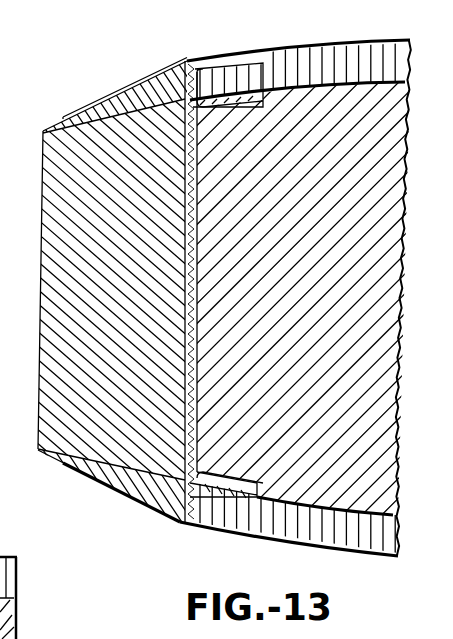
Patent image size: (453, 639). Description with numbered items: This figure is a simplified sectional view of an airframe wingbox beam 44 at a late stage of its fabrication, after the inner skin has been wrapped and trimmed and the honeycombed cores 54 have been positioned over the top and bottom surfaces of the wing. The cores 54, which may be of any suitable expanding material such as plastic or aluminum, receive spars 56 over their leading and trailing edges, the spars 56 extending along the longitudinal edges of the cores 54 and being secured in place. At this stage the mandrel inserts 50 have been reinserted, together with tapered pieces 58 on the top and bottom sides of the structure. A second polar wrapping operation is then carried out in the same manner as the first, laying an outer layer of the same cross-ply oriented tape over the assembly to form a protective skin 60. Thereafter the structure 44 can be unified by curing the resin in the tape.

The wingbox beam 44 is at (277, 38).
The mandrel insert 50 is at (73, 435).
The honeycombed core 54 is at (335, 55).
The spar 56 is at (226, 68).
The tapered piece 58 is at (155, 90).
The protective skin 60 is at (125, 90).